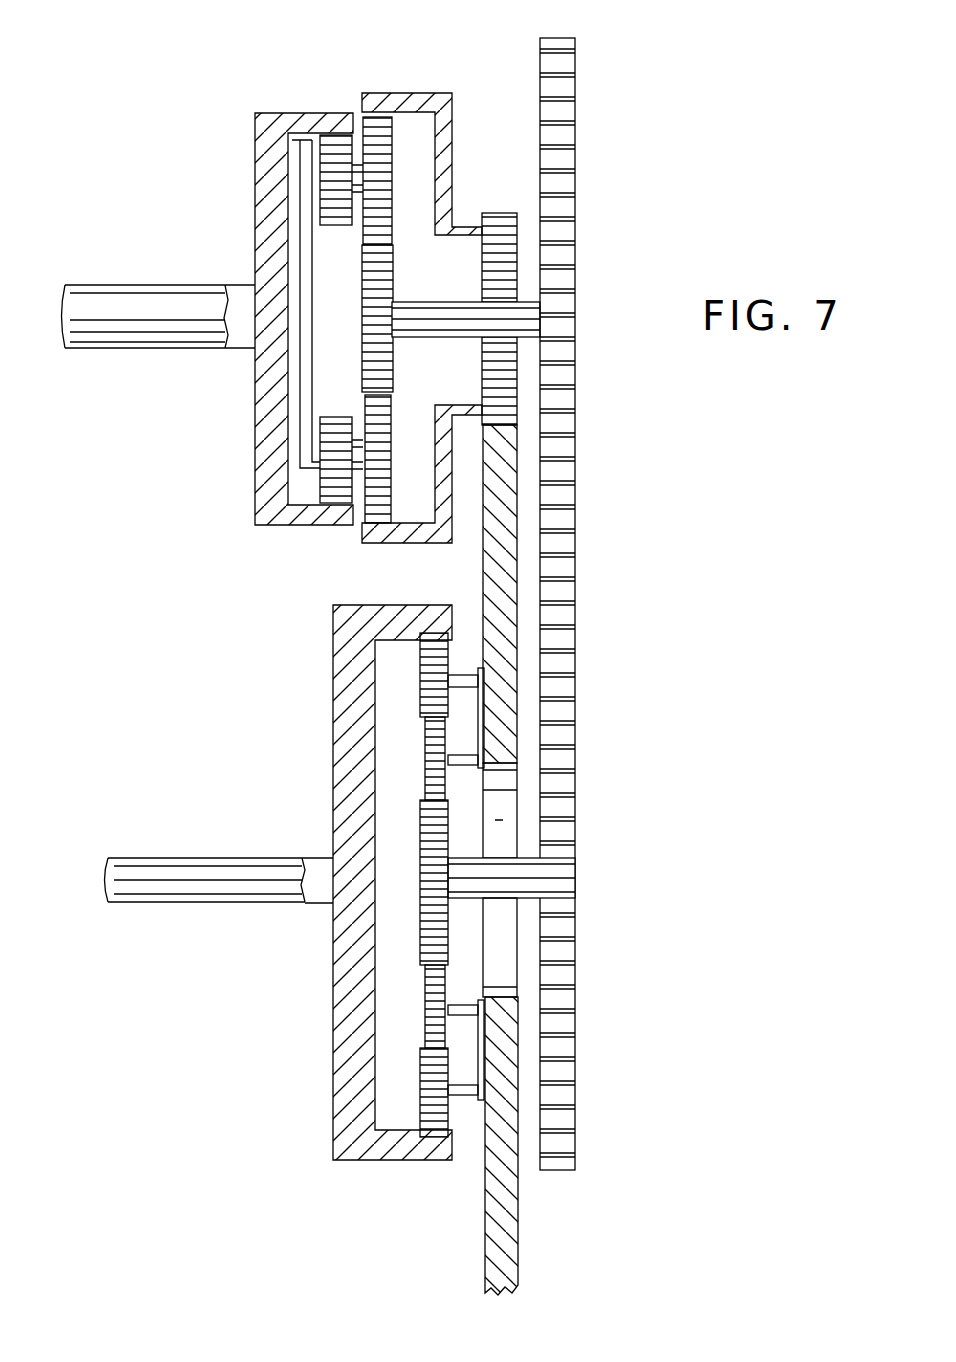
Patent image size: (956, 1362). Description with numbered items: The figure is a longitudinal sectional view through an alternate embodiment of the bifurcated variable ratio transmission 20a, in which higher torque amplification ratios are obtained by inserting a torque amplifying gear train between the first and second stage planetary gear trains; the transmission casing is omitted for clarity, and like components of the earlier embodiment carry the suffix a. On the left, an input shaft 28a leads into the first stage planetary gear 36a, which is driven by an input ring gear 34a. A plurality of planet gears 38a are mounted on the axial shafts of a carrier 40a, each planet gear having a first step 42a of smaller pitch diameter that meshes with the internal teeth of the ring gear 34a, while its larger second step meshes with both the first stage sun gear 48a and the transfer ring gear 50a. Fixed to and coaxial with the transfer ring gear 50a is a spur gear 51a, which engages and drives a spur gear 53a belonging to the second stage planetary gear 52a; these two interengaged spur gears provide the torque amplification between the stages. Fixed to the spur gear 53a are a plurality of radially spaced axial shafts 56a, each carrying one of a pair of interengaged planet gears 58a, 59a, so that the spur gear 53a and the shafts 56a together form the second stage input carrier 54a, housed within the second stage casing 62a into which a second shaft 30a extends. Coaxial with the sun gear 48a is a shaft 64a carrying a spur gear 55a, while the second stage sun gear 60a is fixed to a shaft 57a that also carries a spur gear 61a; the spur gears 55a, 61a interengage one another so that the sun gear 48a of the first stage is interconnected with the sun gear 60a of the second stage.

The bifurcated variable ratio transmission 20a is at (203, 100).
The input shaft 28a is at (76, 284).
The input shaft 30a is at (150, 902).
The input ring gear 34a is at (275, 525).
The first stage planetary gear 36a is at (358, 86).
The planet gears 38a is at (385, 197).
The carrier 40a is at (312, 352).
The first step 42a is at (320, 168).
The first stage sun gear 48a is at (392, 360).
The transfer ring gear 50a is at (393, 543).
The spur gear 51a is at (500, 212).
The second stage planetary gear 52a is at (210, 810).
The spur gear 53a is at (518, 538).
The second stage input carrier 54a is at (512, 1140).
The spur gear 55a is at (570, 196).
The axial shafts 56a is at (465, 652).
The shaft 57a is at (505, 888).
The planet gears 58a is at (425, 760).
The planet gears 59a is at (420, 676).
The sun gear 60a is at (418, 845).
The spur gear 61a is at (572, 815).
The housing 62a is at (375, 1160).
The shaft 64a is at (463, 292).